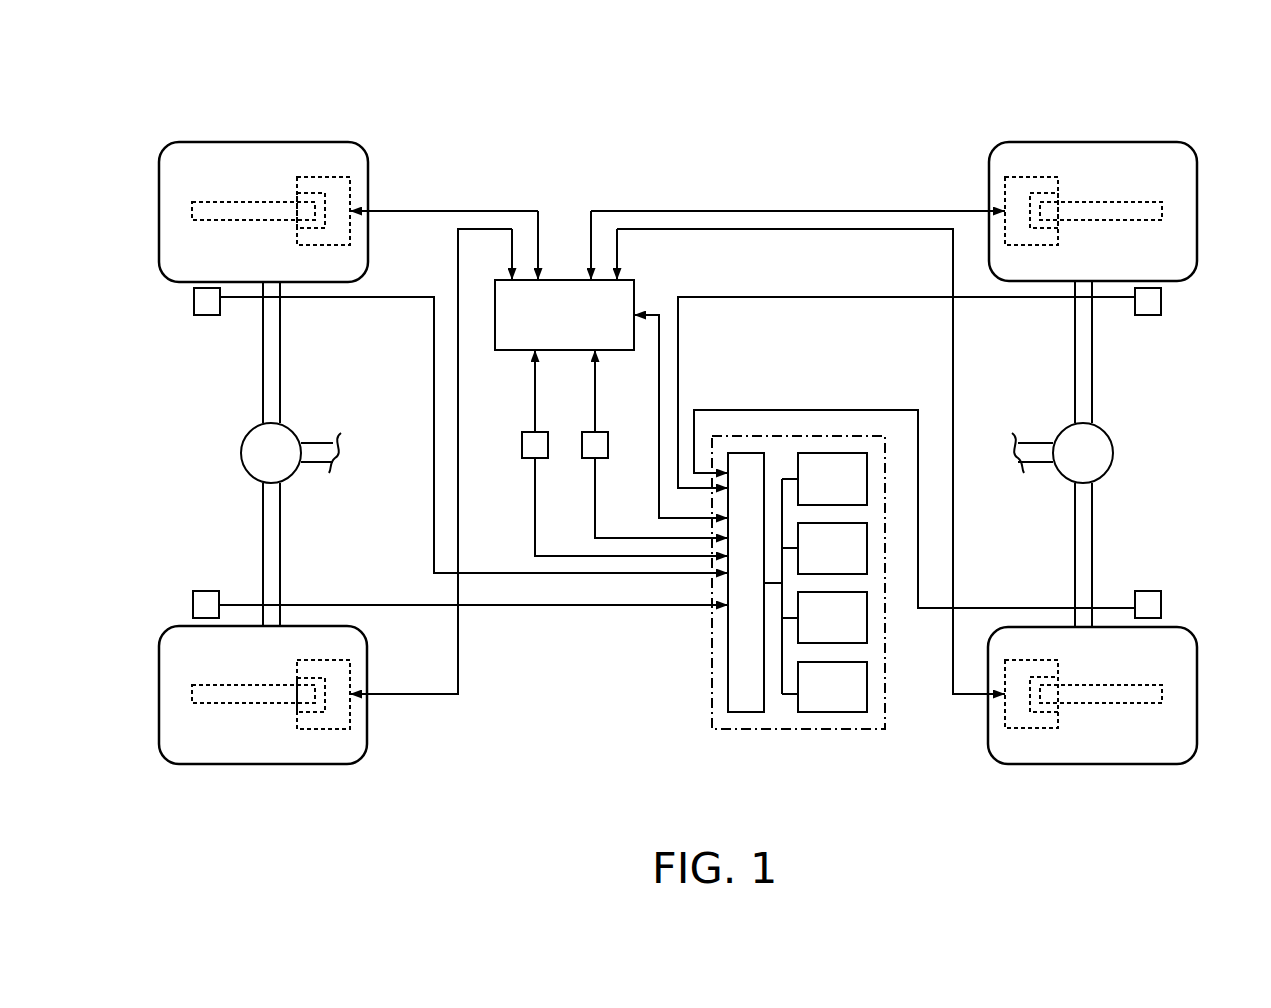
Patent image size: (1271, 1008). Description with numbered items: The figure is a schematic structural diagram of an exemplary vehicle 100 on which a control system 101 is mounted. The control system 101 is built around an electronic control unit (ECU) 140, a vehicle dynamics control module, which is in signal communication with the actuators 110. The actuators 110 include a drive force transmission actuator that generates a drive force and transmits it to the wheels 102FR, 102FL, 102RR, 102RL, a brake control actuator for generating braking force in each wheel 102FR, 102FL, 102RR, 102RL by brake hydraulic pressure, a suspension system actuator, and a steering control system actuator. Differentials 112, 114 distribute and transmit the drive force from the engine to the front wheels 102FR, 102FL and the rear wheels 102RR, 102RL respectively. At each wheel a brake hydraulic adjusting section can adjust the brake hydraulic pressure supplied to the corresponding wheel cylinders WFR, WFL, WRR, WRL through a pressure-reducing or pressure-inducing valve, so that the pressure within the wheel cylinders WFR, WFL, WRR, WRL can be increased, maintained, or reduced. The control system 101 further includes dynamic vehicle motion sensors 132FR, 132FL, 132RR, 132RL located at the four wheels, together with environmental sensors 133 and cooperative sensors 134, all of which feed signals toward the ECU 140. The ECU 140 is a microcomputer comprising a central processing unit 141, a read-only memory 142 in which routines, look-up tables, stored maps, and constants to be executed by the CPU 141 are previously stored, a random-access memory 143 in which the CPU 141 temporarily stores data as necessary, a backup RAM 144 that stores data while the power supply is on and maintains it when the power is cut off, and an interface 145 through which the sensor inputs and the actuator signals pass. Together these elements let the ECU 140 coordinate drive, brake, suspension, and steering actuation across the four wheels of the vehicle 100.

The vehicle 100 is at (103, 94).
The control system 101 is at (611, 181).
The front right wheel 102FR is at (263, 193).
The front left wheel 102FL is at (263, 715).
The rear right wheel 102RR is at (1093, 192).
The rear left wheel 102RL is at (1092, 716).
The front right wheel cylinder WFR is at (297, 190).
The front left wheel cylinder WFL is at (297, 718).
The rear right wheel cylinder WRR is at (1080, 176).
The rear left wheel cylinder WRL is at (1058, 718).
The actuators 110 is at (677, 452).
The differential 112 is at (291, 429).
The differential 114 is at (1062, 429).
The dynamic vehicle motion sensor 132FR is at (206, 315).
The dynamic vehicle motion sensor 132FL is at (193, 605).
The dynamic vehicle motion sensor 132RR is at (1148, 315).
The dynamic vehicle motion sensor 132RL is at (1150, 591).
The environmental sensors 133 is at (522, 452).
The cooperative sensors 134 is at (630, 444).
The electronic control unit 140 is at (777, 603).
The central processing unit 141 is at (832, 479).
The read-only memory 142 is at (832, 548).
The random-access memory 143 is at (832, 617).
The backup RAM 144 is at (832, 687).
The interface 145 is at (728, 672).